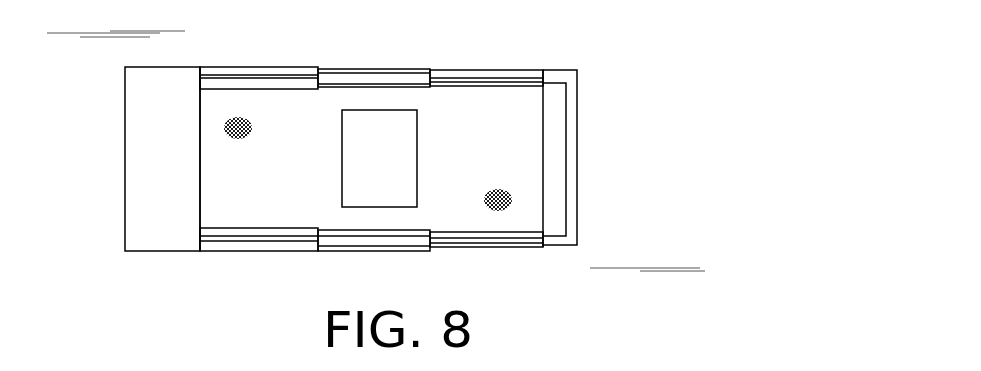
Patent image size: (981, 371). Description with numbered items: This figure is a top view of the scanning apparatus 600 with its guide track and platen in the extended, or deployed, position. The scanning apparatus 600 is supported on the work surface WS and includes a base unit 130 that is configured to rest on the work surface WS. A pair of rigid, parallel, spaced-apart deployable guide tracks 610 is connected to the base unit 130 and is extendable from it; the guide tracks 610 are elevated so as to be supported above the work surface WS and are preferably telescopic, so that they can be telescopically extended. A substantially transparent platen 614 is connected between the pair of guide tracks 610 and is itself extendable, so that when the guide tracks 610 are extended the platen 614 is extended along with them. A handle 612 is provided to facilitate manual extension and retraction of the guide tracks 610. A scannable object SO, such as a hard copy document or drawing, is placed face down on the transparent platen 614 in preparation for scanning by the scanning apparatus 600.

The scanning apparatus 600 is at (656, 41).
The deployable guide track 610 is at (262, 72).
The handle 612 is at (576, 158).
The transparent platen 614 is at (304, 169).
The base unit 130 is at (125, 185).
The scannable object SO is at (417, 166).
The work surface WS is at (99, 72).